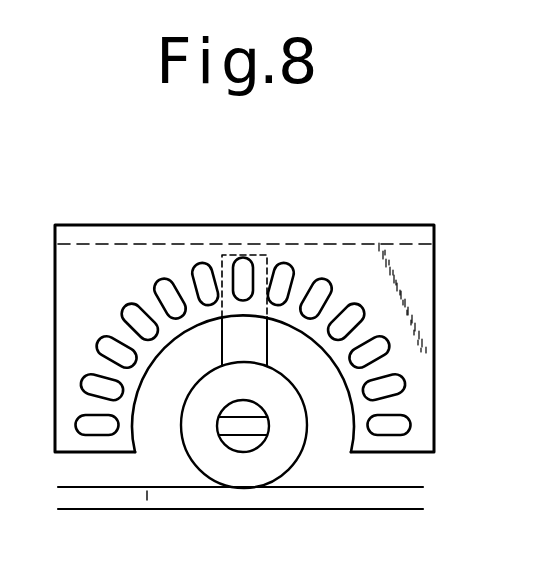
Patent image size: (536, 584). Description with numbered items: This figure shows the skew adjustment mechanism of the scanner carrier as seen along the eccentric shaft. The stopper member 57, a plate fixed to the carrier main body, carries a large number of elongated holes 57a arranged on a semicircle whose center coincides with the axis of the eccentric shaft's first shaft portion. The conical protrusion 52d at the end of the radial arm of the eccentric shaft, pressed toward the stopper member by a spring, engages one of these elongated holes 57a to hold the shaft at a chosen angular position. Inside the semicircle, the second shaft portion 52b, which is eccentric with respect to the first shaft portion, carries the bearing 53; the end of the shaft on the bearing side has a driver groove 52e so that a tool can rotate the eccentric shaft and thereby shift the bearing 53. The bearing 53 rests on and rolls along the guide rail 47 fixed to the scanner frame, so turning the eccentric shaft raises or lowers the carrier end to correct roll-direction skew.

The stopper member 57 is at (196, 223).
The elongated hole 57a is at (97, 435).
The conical protrusion 52d is at (261, 272).
The bearing 53 is at (298, 463).
The second shaft portion 52b is at (262, 450).
The driver groove 52e is at (233, 431).
The guide rail 47 is at (346, 512).